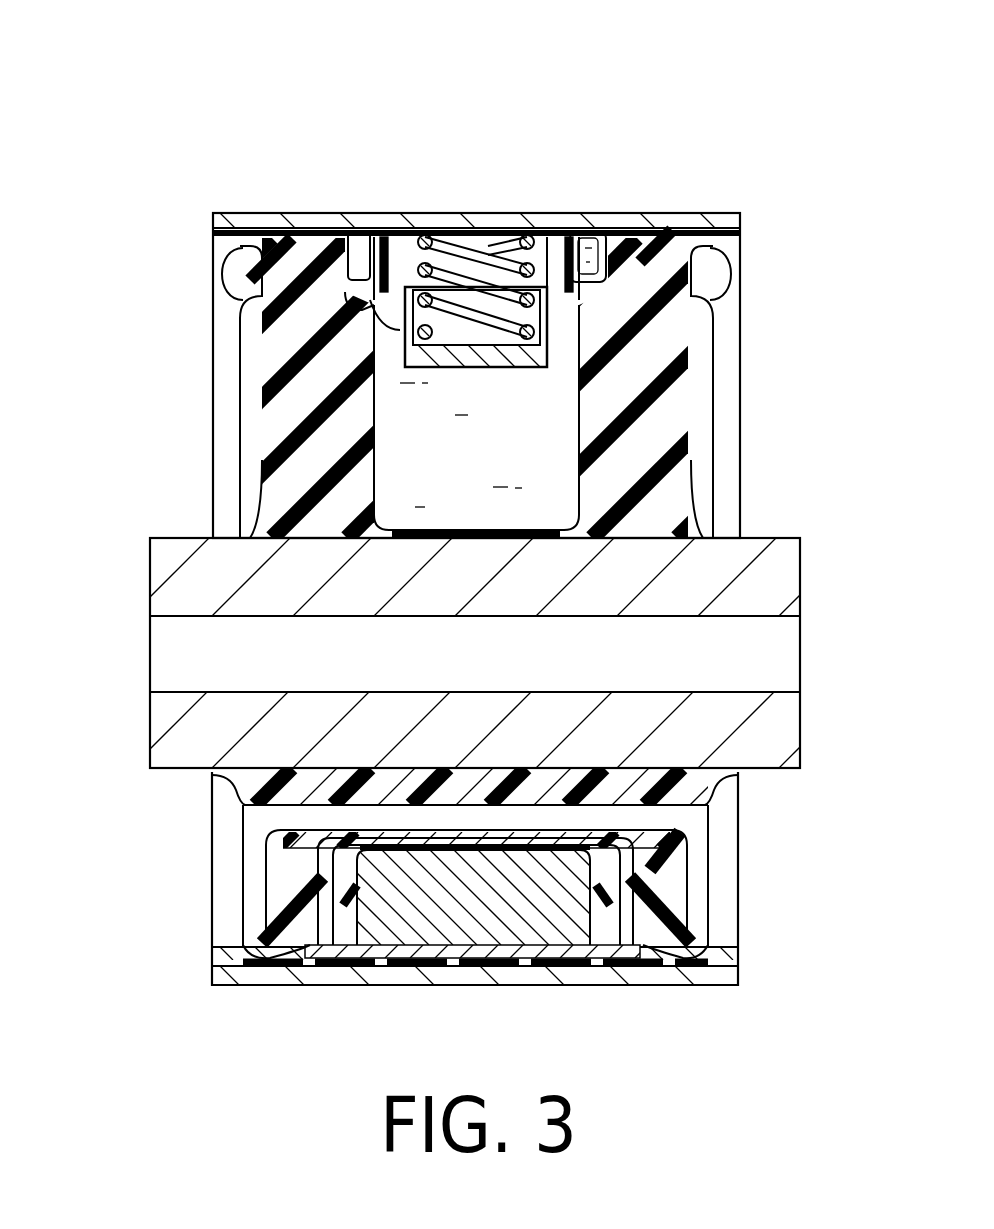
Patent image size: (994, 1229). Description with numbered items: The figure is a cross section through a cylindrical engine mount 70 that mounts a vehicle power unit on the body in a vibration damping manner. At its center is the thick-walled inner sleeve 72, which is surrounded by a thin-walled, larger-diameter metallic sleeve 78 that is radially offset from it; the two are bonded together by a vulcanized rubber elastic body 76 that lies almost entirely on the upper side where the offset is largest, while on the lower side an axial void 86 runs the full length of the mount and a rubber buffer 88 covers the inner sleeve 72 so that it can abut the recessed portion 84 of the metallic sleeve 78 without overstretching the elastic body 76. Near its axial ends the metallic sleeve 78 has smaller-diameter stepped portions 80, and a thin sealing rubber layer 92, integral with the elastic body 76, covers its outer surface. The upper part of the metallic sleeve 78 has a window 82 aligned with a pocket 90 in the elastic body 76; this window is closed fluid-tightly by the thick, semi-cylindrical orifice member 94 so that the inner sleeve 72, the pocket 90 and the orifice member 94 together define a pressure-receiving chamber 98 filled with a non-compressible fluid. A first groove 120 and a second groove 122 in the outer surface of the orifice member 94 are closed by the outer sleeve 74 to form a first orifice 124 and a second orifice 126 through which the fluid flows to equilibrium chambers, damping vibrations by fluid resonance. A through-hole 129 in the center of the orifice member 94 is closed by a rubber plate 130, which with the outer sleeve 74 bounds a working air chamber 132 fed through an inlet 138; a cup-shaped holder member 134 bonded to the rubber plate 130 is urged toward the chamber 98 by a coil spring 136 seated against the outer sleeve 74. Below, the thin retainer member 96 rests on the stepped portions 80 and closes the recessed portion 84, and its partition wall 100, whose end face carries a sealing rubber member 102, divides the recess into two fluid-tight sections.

The engine mount 70 is at (150, 172).
The inner sleeve 72 is at (765, 572).
The outer sleeve 74 is at (508, 975).
The elastic body 76 is at (280, 427).
The metallic sleeve 78 is at (706, 210).
The stepped portions 80 is at (625, 232).
The window 82 is at (363, 304).
The recessed portion 84 is at (412, 945).
The axial void 86 is at (463, 945).
The rubber buffer 88 is at (593, 797).
The pocket 90 is at (575, 462).
The sealing rubber layer 92 is at (297, 232).
The orifice member 94 is at (379, 222).
The retainer member 96 is at (565, 955).
The pressure-receiving chamber 98 is at (548, 410).
The partition wall 100 is at (538, 880).
The sealing rubber member 102 is at (347, 872).
The first groove 120 is at (355, 258).
The second groove 122 is at (595, 262).
The first orifice 124 is at (363, 230).
The second orifice 126 is at (590, 230).
The through-hole 129 is at (551, 228).
The rubber plate 130 is at (368, 343).
The working air chamber 132 is at (537, 228).
The holder member 134 is at (497, 356).
The coil spring 136 is at (426, 232).
The inlet 138 is at (480, 225).